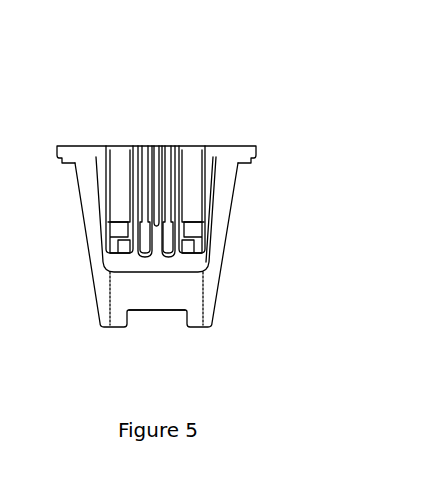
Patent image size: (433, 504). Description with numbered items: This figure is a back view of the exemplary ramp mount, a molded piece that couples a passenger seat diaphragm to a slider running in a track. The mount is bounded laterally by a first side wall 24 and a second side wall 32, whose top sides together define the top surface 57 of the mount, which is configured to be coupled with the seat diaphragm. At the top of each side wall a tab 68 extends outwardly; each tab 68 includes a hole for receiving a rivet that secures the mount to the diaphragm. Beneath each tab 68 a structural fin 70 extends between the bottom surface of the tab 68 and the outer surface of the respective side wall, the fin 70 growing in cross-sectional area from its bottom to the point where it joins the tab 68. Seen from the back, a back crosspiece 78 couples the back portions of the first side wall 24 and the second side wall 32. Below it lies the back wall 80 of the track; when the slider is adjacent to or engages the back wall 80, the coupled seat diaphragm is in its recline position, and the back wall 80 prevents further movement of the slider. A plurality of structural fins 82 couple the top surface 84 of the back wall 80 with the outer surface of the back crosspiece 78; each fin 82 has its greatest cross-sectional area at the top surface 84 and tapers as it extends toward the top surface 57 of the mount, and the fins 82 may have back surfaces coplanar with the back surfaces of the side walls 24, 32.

The top surface 57 is at (249, 115).
The tab 68 is at (56, 148).
The structural fin 70 is at (77, 171).
The first side wall 24 is at (97, 210).
The second side wall 32 is at (215, 205).
The back crosspiece 78 is at (120, 164).
The structural fin 82 is at (157, 163).
The top surface 84 is at (112, 246).
The back wall 80 is at (153, 300).